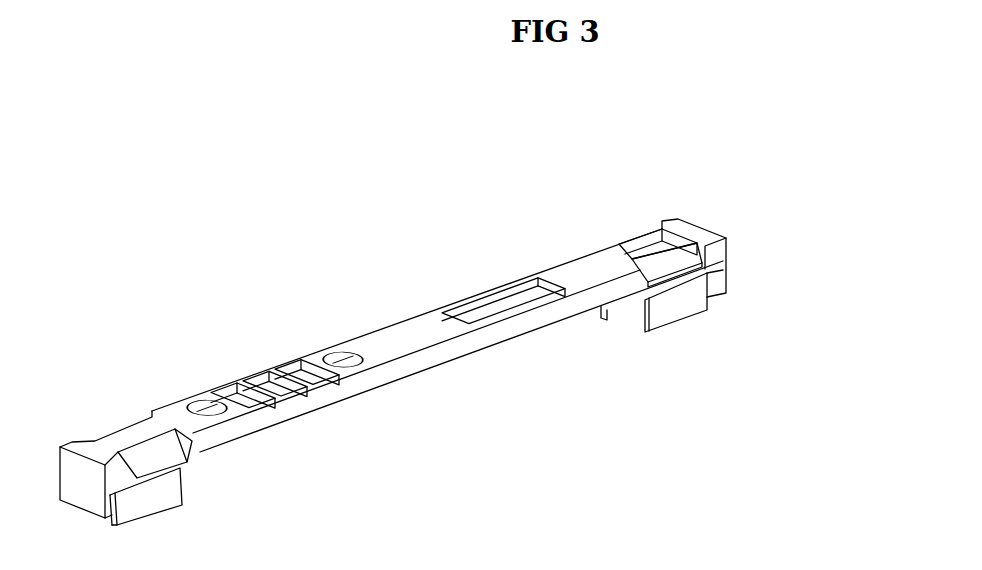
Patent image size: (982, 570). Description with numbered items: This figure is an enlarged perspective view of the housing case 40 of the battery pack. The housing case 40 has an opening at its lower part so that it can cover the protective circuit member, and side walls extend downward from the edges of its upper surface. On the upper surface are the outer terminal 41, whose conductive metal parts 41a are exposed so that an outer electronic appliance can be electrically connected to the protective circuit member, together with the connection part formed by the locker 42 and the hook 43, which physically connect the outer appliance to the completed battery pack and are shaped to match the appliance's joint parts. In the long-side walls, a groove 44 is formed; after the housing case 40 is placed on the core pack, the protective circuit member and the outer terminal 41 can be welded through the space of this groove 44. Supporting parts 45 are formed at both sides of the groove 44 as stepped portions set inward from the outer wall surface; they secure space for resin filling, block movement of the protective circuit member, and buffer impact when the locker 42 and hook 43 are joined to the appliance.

The housing case 40 is at (88, 144).
The outer terminal 41 is at (244, 360).
The metal part 41a is at (305, 376).
The locker 42 is at (648, 260).
The hook 43 is at (150, 457).
The groove 44 is at (415, 382).
The supporting part 45 is at (695, 298).